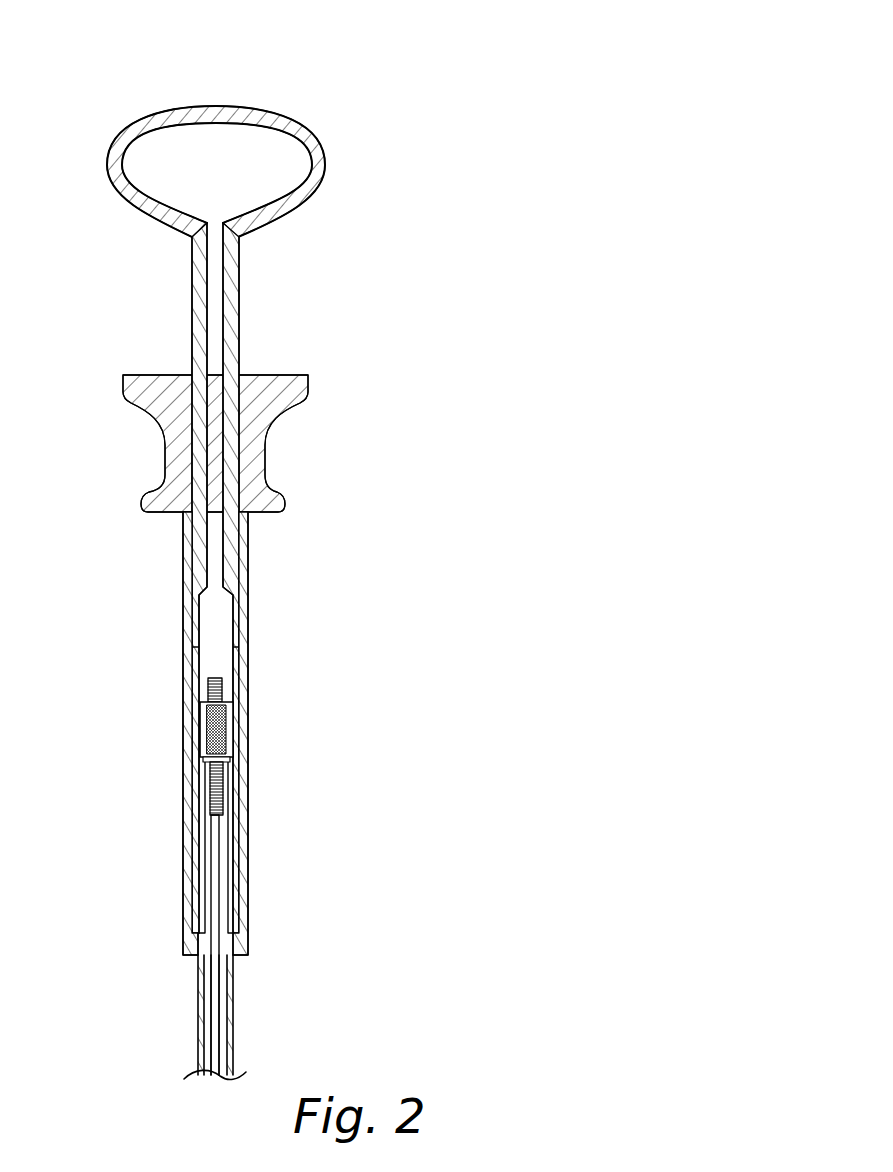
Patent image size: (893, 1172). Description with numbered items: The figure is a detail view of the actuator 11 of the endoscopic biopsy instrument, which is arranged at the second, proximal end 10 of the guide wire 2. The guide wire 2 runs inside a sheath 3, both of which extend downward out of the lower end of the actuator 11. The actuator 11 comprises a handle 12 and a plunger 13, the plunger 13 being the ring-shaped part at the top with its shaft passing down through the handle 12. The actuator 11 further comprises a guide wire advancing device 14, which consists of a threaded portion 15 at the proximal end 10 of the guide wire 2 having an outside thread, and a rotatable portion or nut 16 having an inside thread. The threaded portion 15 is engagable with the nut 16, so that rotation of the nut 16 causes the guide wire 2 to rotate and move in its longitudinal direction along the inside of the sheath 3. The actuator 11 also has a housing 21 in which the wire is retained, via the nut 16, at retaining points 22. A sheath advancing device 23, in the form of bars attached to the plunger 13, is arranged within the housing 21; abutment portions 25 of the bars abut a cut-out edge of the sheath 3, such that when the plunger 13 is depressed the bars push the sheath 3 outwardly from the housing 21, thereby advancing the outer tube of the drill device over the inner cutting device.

The actuator 11 is at (313, 553).
The plunger 13 is at (318, 158).
The handle 12 is at (290, 402).
The guide wire advancing device 14 is at (244, 519).
The retaining points 22 is at (228, 695).
The housing 21 is at (187, 668).
The rotatable portion or nut 16 is at (235, 723).
The sheath advancing device 23 is at (181, 759).
The threaded portion 15 is at (222, 795).
The proximal end 10 is at (222, 817).
The abutment portions 25 is at (235, 955).
The guide wire 2 is at (217, 997).
The sheath 3 is at (232, 1020).